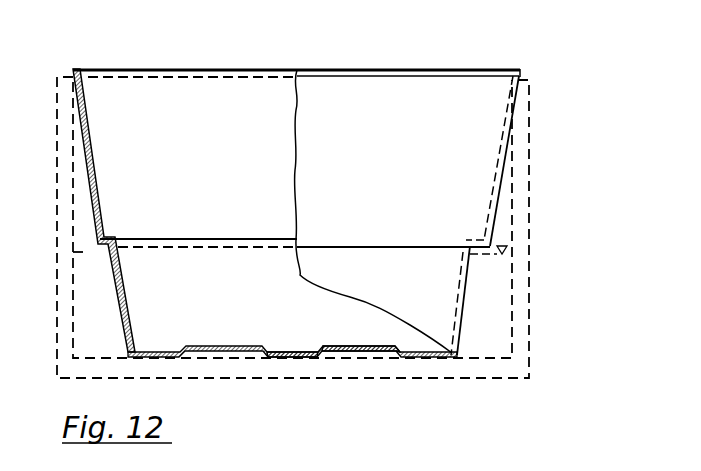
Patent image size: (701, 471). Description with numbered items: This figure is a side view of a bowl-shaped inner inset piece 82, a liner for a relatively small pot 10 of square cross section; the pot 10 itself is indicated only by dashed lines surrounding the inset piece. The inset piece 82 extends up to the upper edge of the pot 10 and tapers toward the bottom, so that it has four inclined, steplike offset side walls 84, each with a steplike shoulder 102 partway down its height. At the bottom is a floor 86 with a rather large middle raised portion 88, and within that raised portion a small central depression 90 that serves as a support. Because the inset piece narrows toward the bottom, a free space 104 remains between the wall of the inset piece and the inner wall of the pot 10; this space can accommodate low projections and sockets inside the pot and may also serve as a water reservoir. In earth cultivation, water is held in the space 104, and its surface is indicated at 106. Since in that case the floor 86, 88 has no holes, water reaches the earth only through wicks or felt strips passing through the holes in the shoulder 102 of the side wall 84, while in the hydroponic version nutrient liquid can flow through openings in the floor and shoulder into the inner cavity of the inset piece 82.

The pot 10 is at (525, 264).
The inner inset piece 82 is at (418, 67).
The side wall 84 is at (497, 172).
The floor 86 is at (414, 358).
The raised portion 88 is at (344, 352).
The central depression 90 is at (290, 358).
The steplike shoulder 102 is at (105, 238).
The free space 104 is at (494, 317).
The water surface 106 is at (509, 253).